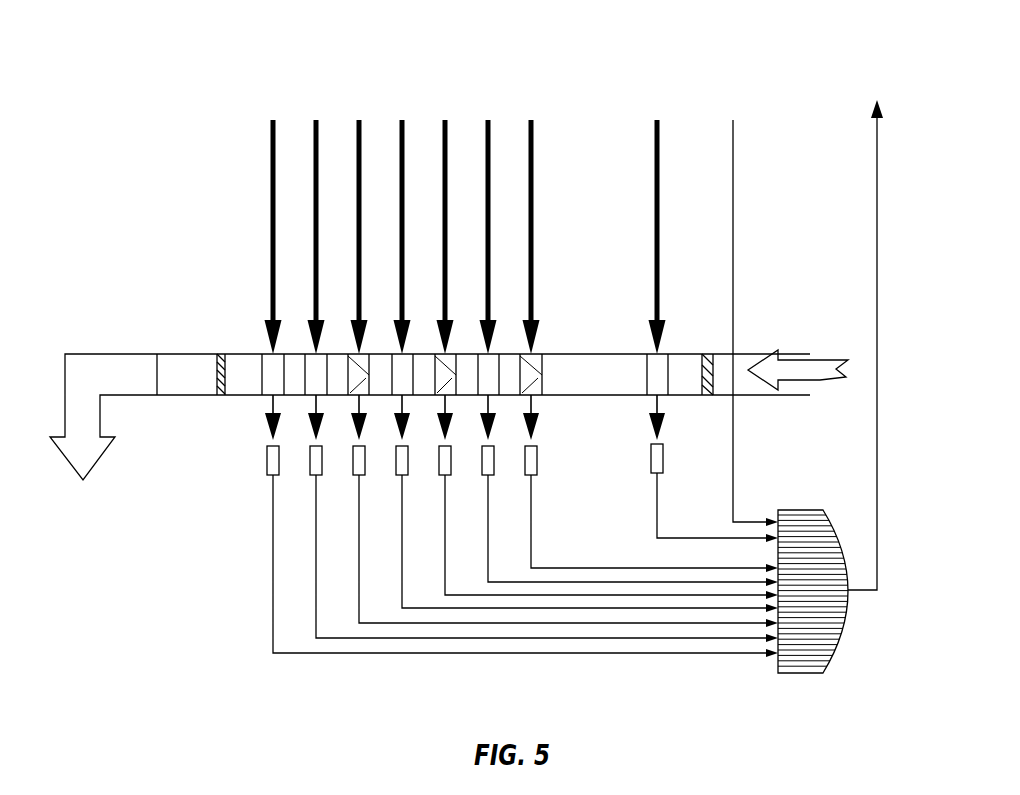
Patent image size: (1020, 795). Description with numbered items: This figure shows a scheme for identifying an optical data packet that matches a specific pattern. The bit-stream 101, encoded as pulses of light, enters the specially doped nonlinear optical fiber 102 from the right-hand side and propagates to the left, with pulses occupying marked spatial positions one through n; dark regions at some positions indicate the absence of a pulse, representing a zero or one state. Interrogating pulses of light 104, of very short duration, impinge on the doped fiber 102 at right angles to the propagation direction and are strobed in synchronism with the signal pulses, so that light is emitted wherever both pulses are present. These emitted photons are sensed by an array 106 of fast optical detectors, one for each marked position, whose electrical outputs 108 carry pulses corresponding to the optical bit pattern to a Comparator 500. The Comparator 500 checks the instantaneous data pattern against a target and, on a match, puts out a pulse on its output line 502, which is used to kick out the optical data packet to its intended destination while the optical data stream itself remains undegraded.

The interrogating pulses of light 104 is at (275, 82).
The doped optical fiber 102 is at (687, 351).
The bit-stream 101 is at (820, 377).
The output line 502 is at (877, 217).
The array of fast optical detectors 106 is at (352, 468).
The electrical outputs 108 is at (672, 655).
The Comparator 500 is at (803, 673).